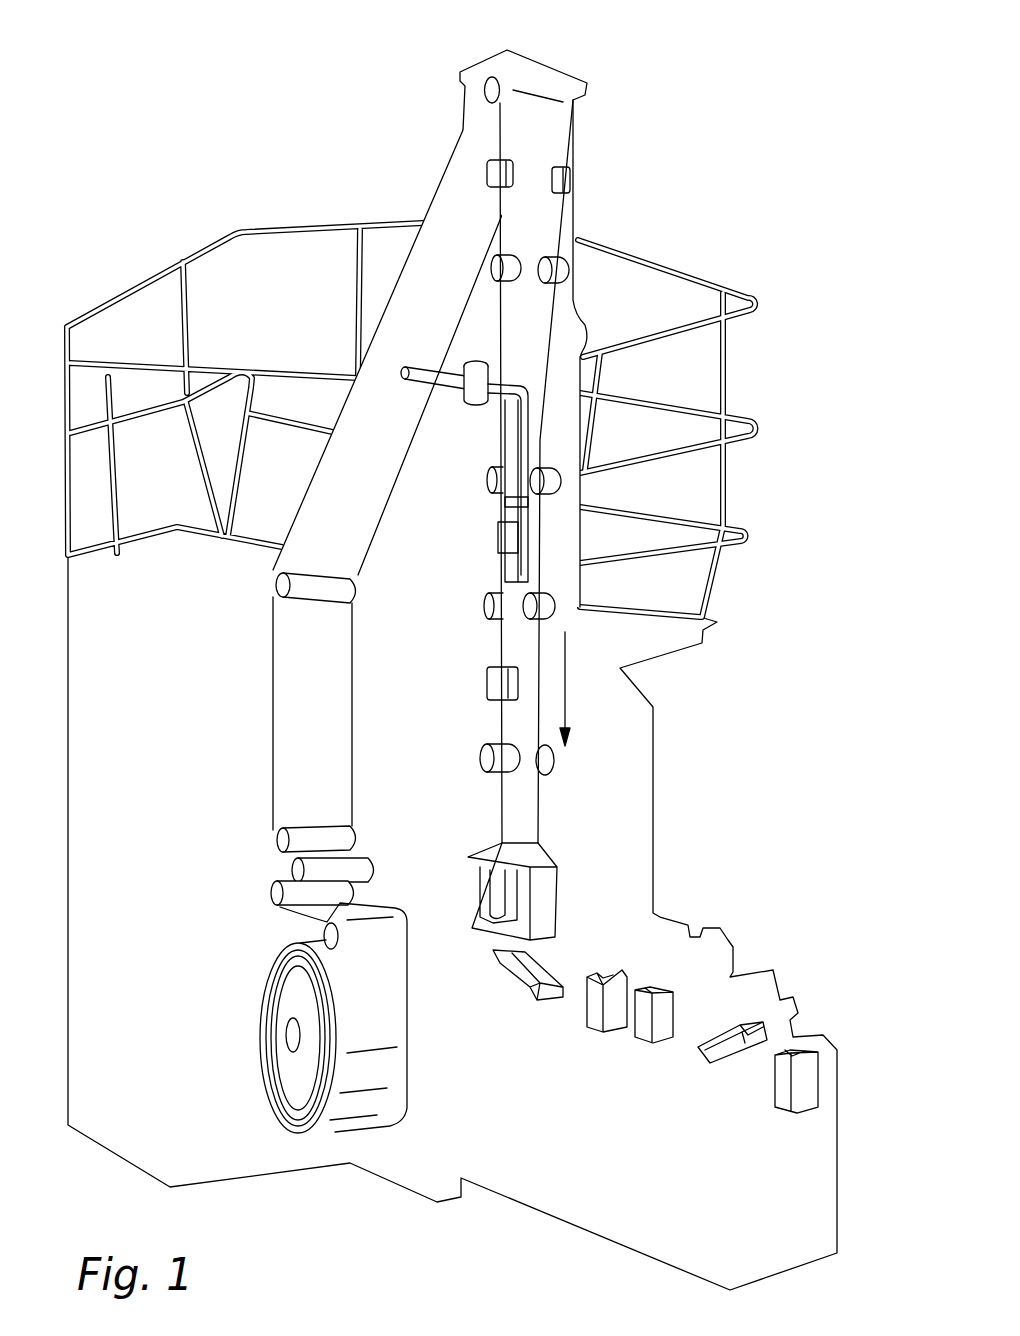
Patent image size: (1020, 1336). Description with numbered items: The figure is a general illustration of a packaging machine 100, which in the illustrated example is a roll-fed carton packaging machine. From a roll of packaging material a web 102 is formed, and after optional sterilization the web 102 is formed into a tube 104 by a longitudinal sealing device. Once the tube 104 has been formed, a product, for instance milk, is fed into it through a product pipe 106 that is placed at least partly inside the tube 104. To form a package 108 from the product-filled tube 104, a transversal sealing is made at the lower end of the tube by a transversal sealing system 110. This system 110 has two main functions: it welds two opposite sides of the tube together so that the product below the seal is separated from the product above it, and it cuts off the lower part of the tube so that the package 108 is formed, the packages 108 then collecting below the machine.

The packaging machine 100 is at (737, 162).
The web 102 is at (303, 697).
The tube 104 is at (517, 815).
The product pipe 106 is at (523, 425).
The package 108 is at (660, 1017).
The transversal sealing system 110 is at (547, 903).